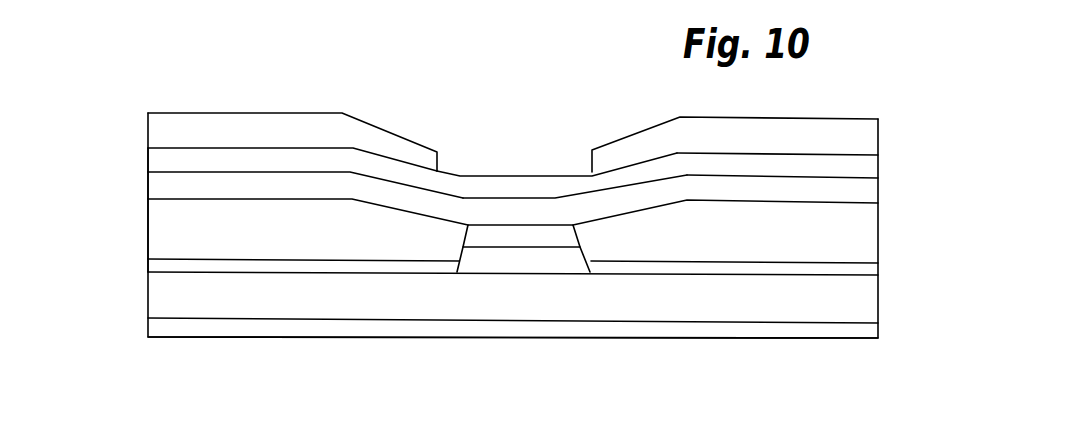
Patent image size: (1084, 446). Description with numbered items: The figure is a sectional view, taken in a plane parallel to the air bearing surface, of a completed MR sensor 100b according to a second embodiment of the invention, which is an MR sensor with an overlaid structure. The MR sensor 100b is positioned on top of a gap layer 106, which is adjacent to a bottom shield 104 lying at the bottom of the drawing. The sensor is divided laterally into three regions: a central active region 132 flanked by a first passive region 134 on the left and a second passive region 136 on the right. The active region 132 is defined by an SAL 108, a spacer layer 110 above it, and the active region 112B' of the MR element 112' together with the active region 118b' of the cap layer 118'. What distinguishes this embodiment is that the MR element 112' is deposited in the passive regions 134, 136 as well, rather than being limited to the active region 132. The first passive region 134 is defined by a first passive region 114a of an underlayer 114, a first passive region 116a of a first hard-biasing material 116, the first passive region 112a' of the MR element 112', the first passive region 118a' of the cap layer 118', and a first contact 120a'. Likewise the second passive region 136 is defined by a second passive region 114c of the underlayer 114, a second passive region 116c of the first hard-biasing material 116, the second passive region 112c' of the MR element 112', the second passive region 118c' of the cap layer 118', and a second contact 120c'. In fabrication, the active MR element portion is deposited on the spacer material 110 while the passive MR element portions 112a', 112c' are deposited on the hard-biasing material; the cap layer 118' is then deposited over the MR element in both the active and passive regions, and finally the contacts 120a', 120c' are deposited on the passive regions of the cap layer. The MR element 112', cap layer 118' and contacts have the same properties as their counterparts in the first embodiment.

The MR sensor 100b is at (204, 56).
The bottom shield 104 is at (705, 336).
The gap layer 106 is at (577, 308).
The SAL 108 is at (530, 260).
The spacer layer 110 is at (508, 237).
The MR element 112' is at (115, 186).
The first passive region of MR element 112a' is at (305, 135).
The active region of MR element 112B' is at (575, 159).
The second passive region of MR element 112c' is at (822, 172).
The underlayer 114 is at (144, 263).
The first passive region of underlayer 114a is at (185, 267).
The second passive region of underlayer 114c is at (675, 270).
The first hard-biasing material 116 is at (144, 242).
The first passive region of first hard-biasing material 116a is at (418, 249).
The second passive region of first hard-biasing material 116c is at (607, 247).
The cap layer 118' is at (115, 159).
The first passive region of cap layer 118a' is at (292, 122).
The active region of cap layer 118b' is at (573, 132).
The second passive region of cap layer 118c' is at (812, 144).
The first contact 120a' is at (292, 122).
The second contact 120c' is at (737, 128).
The active region 132 is at (504, 354).
The first passive region 134 is at (263, 345).
The second passive region 136 is at (792, 352).